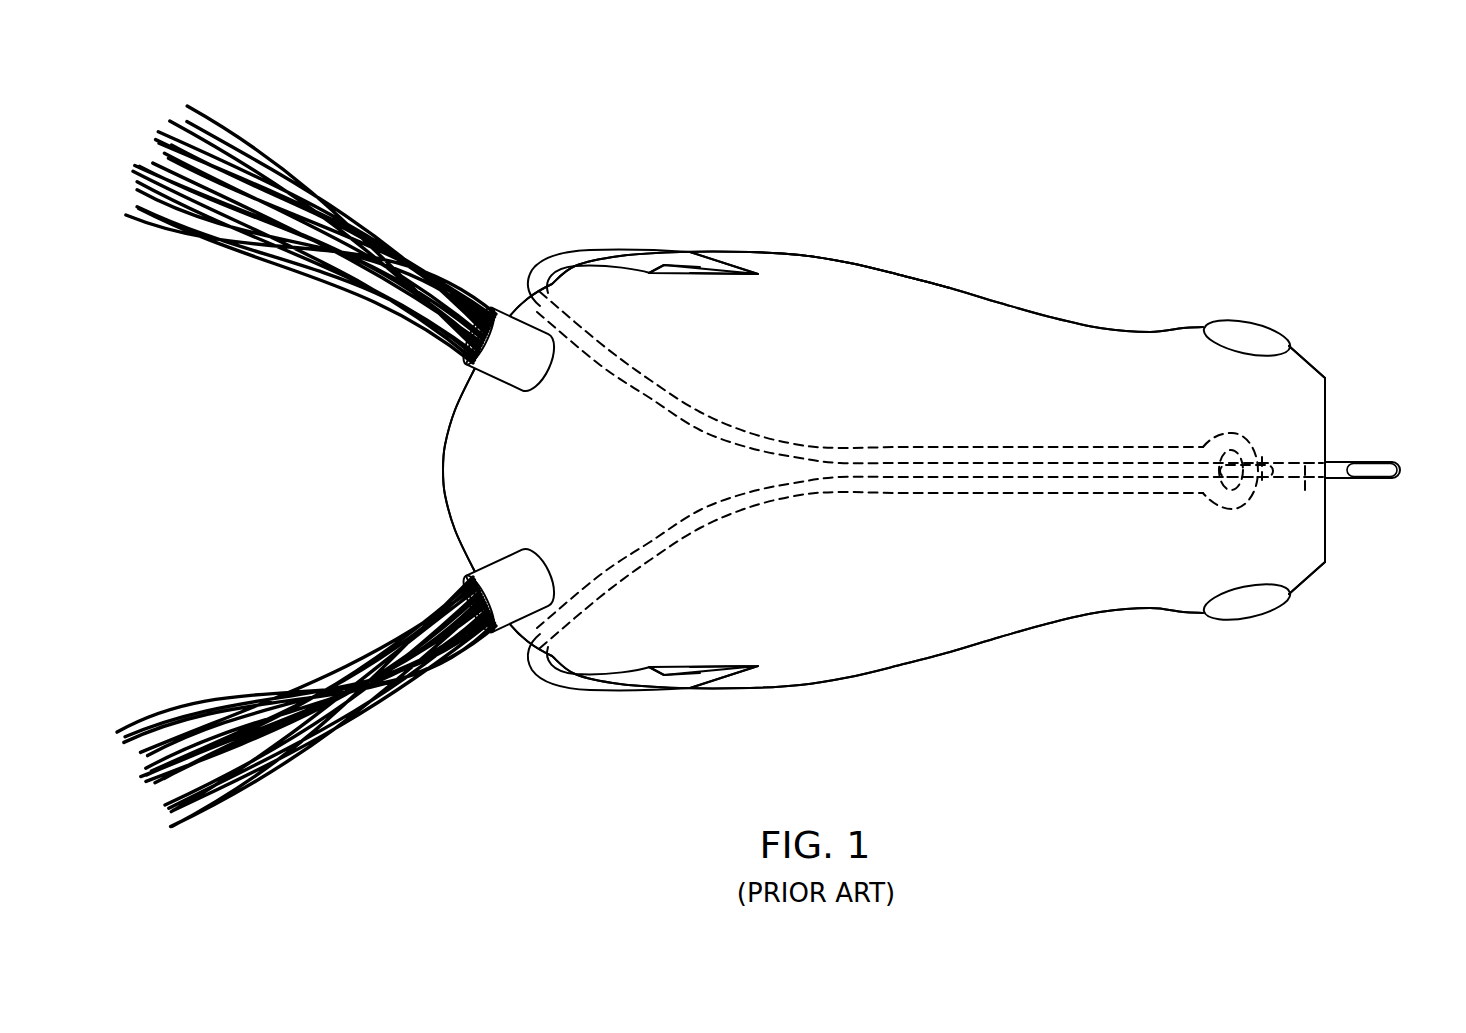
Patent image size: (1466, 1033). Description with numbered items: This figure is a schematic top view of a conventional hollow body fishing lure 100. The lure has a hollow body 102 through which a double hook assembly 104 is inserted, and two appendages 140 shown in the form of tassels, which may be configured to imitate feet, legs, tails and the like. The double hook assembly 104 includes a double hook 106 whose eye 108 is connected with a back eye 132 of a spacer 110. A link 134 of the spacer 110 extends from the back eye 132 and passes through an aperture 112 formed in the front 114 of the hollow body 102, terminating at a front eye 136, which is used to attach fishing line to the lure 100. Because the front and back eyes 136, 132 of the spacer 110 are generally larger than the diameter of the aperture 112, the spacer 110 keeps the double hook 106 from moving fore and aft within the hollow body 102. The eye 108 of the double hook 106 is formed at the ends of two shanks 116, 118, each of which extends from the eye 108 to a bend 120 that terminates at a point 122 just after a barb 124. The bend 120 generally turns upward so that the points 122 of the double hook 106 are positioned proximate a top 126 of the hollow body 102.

The hollow body fishing lure 100 is at (956, 147).
The hollow body 102 is at (1010, 303).
The double hook assembly 104 is at (605, 243).
The double hook 106 is at (624, 683).
The eye 108 is at (1227, 510).
The spacer 110 is at (1346, 484).
The aperture 112 is at (1312, 460).
The front 114 is at (1328, 538).
The shank 116 is at (920, 447).
The shank 118 is at (1030, 493).
The bend 120 is at (529, 284).
The point 122 is at (758, 275).
The barb 124 is at (665, 270).
The top 126 is at (855, 314).
The back eye 132 is at (1262, 457).
The link 134 is at (1305, 490).
The front eye 136 is at (1380, 468).
The appendage 140 is at (291, 317).